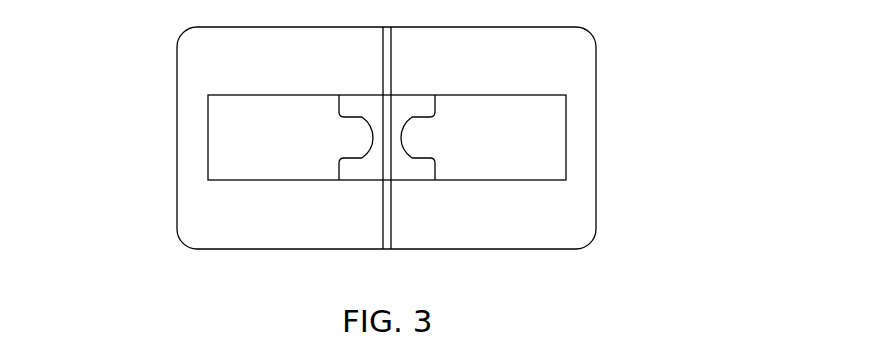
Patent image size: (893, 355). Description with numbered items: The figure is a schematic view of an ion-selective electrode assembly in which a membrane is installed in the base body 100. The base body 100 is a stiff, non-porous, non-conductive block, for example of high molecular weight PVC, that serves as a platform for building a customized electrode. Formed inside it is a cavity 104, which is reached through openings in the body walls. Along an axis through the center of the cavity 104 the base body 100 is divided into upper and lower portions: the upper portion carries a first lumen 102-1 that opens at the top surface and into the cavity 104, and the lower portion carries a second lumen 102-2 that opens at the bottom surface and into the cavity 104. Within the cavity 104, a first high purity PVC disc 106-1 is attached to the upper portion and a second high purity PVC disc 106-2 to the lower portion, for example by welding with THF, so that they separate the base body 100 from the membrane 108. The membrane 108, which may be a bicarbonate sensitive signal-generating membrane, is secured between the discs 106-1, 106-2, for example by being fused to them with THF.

The base body 100 is at (585, 30).
The first lumen 102-1 is at (383, 65).
The second lumen 102-2 is at (383, 202).
The cavity 104 is at (305, 134).
The first high purity PVC disc 106-1 is at (435, 104).
The second high purity PVC disc 106-2 is at (435, 168).
The membrane 108 is at (401, 139).